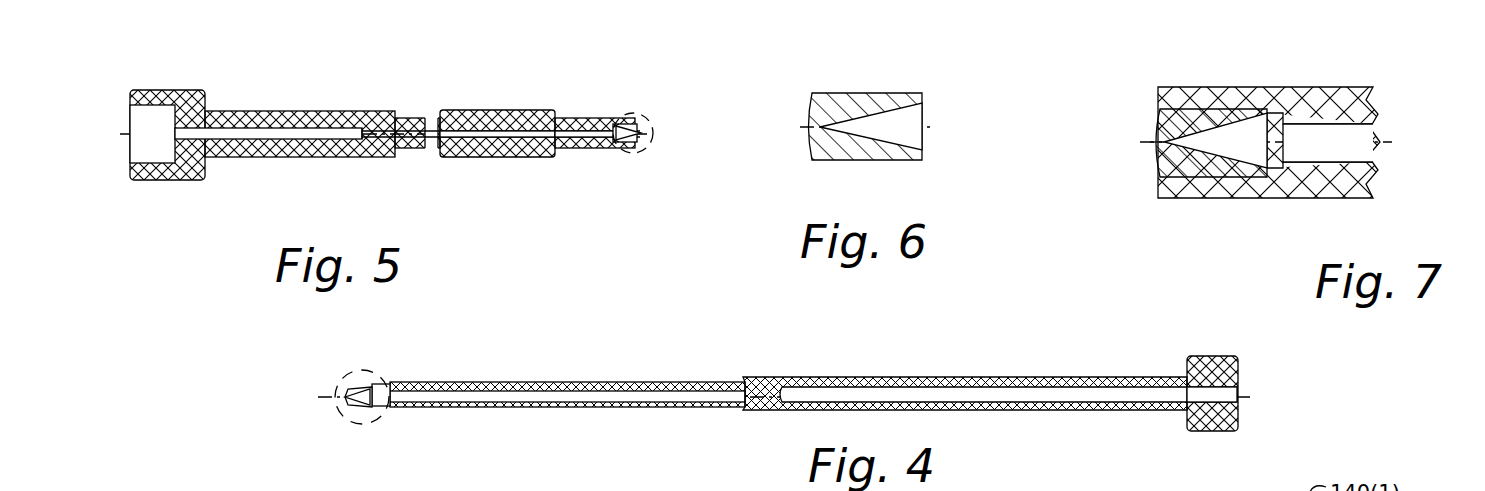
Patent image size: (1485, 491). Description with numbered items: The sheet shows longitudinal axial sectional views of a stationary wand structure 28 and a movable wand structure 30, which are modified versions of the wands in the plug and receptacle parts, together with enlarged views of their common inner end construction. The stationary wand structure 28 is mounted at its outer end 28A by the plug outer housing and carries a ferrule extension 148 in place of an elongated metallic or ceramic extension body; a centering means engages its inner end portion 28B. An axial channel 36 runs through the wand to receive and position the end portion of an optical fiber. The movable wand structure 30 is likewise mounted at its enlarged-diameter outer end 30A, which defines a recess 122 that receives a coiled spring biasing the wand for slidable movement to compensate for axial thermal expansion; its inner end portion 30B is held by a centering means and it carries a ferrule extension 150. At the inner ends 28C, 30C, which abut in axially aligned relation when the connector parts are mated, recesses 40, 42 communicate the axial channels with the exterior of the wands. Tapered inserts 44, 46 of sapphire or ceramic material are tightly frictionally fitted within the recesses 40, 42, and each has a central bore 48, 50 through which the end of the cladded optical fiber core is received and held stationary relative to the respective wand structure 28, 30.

In FIG. 4, the stationary wand structure 28 is at (777, 391).
In FIG. 4, the outer end of stationary wand structure 28A is at (1200, 357).
In FIG. 4, the inner end portion of stationary wand structure 28B is at (712, 382).
In FIG. 7, the inner end of stationary wand structure 28C is at (1236, 169).
In FIG. 4, the inner end of stationary wand structure 28C is at (354, 403).
In FIG. 5, the movable wand structure 30 is at (405, 157).
In FIG. 5, the outer end of movable wand structure 30A is at (186, 144).
In FIG. 5, the inner end portion of movable wand structure 30B is at (488, 110).
In FIG. 5, the inner end of movable wand structure 30C is at (624, 150).
In FIG. 7, the inner end of movable wand structure 30C is at (1236, 169).
In FIG. 5, the axial channel 36 is at (338, 130).
In FIG. 4, the axial channel 36 is at (1022, 398).
In FIG. 7, the recess 40 is at (1211, 197).
In FIG. 4, the recess 40 is at (336, 405).
In FIG. 5, the recess 42 is at (651, 143).
In FIG. 7, the recess 42 is at (1212, 177).
In FIG. 6, the tapered insert 44 is at (843, 129).
In FIG. 7, the tapered insert 44 is at (1190, 111).
In FIG. 4, the tapered insert 44 is at (335, 390).
In FIG. 5, the tapered insert 46 is at (650, 128).
In FIG. 6, the tapered insert 46 is at (843, 129).
In FIG. 7, the tapered insert 46 is at (1187, 113).
In FIG. 6, the central bore 48 is at (835, 154).
In FIG. 7, the central bore 48 is at (1128, 203).
In FIG. 6, the central bore 50 is at (820, 127).
In FIG. 7, the central bore 50 is at (1155, 142).
In FIG. 5, the recess 122 is at (153, 162).
In FIG. 4, the ferrule extension 148 is at (510, 382).
In FIG. 5, the ferrule extension 150 is at (548, 112).